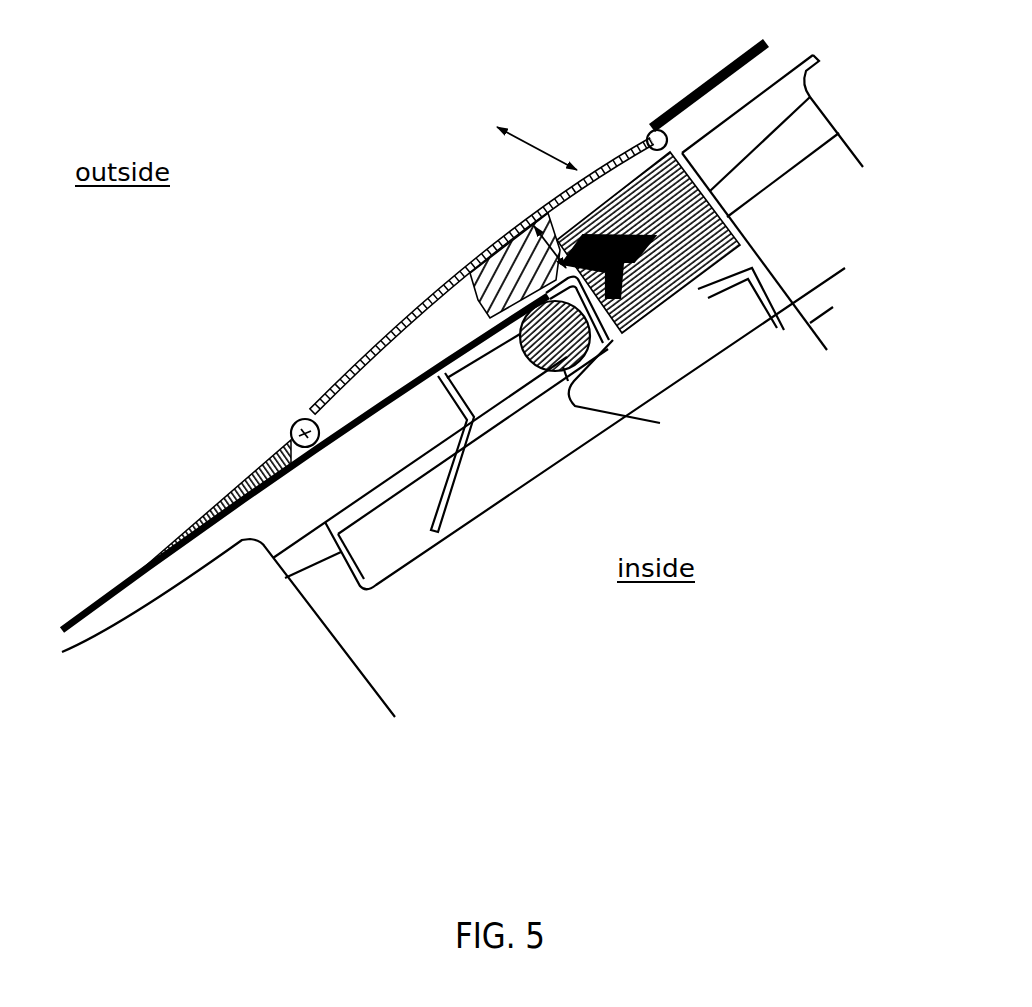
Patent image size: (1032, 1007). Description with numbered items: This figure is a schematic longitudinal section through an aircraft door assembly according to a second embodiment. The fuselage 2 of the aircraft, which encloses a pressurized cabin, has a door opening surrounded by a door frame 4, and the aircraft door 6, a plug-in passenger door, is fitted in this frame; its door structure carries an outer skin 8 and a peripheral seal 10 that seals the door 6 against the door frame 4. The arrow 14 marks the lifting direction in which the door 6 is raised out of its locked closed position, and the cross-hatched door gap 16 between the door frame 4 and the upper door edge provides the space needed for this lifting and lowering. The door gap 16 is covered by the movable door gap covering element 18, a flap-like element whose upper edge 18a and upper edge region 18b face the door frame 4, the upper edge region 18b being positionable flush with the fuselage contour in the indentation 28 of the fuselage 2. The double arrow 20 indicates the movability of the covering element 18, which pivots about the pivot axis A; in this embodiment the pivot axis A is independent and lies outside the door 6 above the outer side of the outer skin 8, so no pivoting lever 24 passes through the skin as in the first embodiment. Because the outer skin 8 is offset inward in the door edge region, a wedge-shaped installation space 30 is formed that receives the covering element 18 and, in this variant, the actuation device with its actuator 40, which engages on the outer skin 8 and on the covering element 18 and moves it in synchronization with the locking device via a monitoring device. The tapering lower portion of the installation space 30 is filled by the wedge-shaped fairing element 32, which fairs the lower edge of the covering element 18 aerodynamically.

The fuselage 2 is at (682, 122).
The door frame 4 is at (768, 165).
The aircraft door 6 is at (122, 386).
The outer skin 8 is at (124, 580).
The peripheral seal 10 is at (430, 303).
The arrow 14 is at (632, 285).
The door gap 16 is at (720, 250).
The movable door gap covering element 18 is at (525, 221).
The upper edge 18a is at (648, 120).
The upper edge region 18b is at (625, 148).
The double arrow 20 is at (540, 148).
The pivoting lever 24 is at (395, 377).
The indentation 28 is at (660, 129).
The installation space 30 is at (425, 345).
The wedge-shaped fairing element 32 is at (250, 464).
The actuator 40 is at (507, 243).
The pivot axis A is at (297, 425).